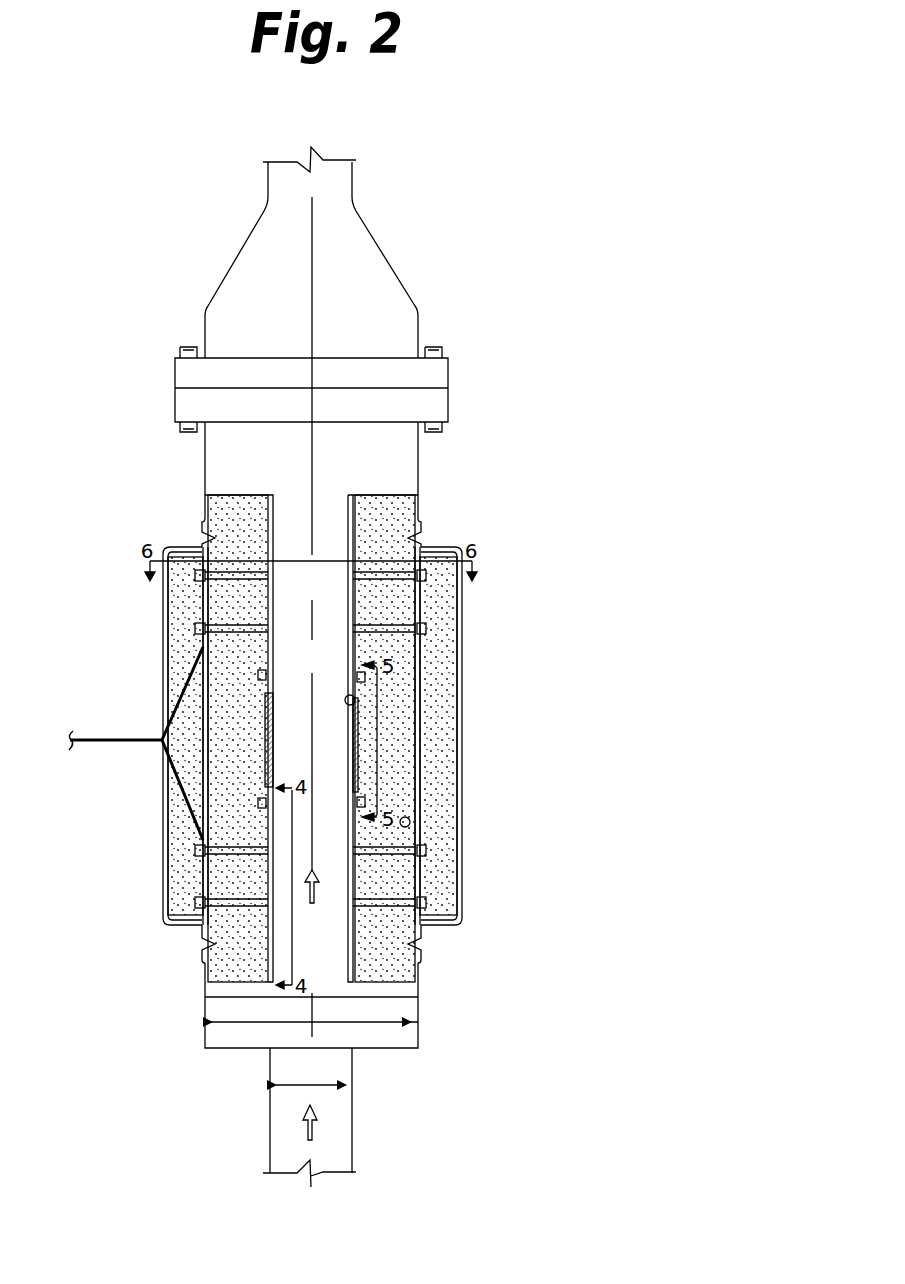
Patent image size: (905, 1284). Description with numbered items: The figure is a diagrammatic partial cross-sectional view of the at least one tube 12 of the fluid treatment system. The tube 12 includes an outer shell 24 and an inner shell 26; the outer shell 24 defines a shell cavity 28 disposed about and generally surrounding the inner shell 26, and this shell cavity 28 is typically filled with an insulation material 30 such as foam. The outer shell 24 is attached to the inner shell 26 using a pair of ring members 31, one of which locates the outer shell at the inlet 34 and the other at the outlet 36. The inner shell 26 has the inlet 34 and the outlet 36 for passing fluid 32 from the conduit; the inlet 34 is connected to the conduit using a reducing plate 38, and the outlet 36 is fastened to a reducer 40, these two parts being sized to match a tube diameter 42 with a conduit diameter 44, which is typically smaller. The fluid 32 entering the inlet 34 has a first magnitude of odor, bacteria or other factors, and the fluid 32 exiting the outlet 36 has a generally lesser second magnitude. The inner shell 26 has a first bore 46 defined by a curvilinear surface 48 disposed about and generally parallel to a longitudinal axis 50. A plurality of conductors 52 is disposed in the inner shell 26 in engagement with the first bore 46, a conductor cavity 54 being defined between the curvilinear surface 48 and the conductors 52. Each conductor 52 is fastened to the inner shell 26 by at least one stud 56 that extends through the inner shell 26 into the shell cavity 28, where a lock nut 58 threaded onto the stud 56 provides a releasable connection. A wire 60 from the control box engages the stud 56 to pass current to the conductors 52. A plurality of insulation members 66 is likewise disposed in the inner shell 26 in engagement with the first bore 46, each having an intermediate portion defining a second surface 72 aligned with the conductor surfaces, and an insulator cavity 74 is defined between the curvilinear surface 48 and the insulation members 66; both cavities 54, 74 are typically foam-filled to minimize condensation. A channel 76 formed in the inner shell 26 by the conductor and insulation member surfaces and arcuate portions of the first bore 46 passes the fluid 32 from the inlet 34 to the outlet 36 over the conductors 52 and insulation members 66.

The tube 12 is at (532, 222).
The outer shell 24 is at (462, 798).
The inner shell 26 is at (418, 462).
The shell cavity 28 is at (440, 648).
The insulation material 30 is at (180, 833).
The ring members 31 is at (425, 535).
The fluid 32 is at (313, 1125).
The inlet 34 is at (387, 1048).
The outlet 36 is at (205, 462).
The reducing plate 38 is at (377, 997).
The reducer 40 is at (233, 313).
The tube diameter 42 is at (237, 1023).
The conduit diameter 44 is at (313, 1087).
The first bore 46 is at (205, 488).
The curvilinear surface 48 is at (410, 822).
The longitudinal axis 50 is at (360, 234).
The plurality of conductors 52 is at (230, 600).
The conductor cavity 54 is at (225, 615).
The stud 56 is at (213, 910).
The lock nut 58 is at (210, 897).
The wire 60 is at (127, 738).
The plurality of insulation members 66 is at (258, 752).
The second surface 72 is at (360, 703).
The insulator cavity 74 is at (228, 662).
The channel 76 is at (352, 498).